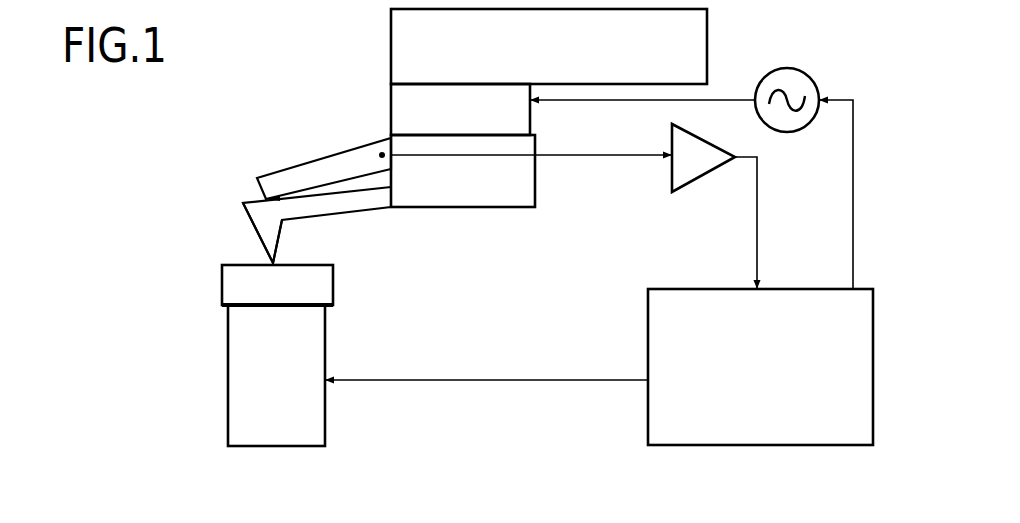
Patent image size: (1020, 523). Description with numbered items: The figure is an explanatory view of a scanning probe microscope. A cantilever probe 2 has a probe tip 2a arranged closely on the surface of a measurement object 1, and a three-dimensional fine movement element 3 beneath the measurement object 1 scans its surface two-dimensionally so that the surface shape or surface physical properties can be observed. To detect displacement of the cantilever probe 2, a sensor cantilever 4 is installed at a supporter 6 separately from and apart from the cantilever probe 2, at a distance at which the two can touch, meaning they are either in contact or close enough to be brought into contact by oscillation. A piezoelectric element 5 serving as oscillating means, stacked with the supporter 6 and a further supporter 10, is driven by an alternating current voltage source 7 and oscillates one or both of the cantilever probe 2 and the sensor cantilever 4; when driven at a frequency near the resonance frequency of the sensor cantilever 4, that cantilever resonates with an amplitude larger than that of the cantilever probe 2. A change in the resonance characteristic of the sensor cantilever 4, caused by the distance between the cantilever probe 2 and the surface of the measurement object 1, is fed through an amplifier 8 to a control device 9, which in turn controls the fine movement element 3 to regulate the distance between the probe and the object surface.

The measurement object 1 is at (318, 285).
The cantilever probe 2 is at (323, 207).
The probe tip 2a is at (270, 233).
The three-dimensional fine movement element 3 is at (310, 412).
The sensor cantilever 4 is at (315, 178).
The piezoelectric element 5 is at (418, 115).
The supporter 6 is at (465, 187).
The alternating current voltage source 7 is at (792, 80).
The amplifier 8 is at (690, 165).
The control device 9 is at (668, 348).
The supporter 10 is at (420, 53).